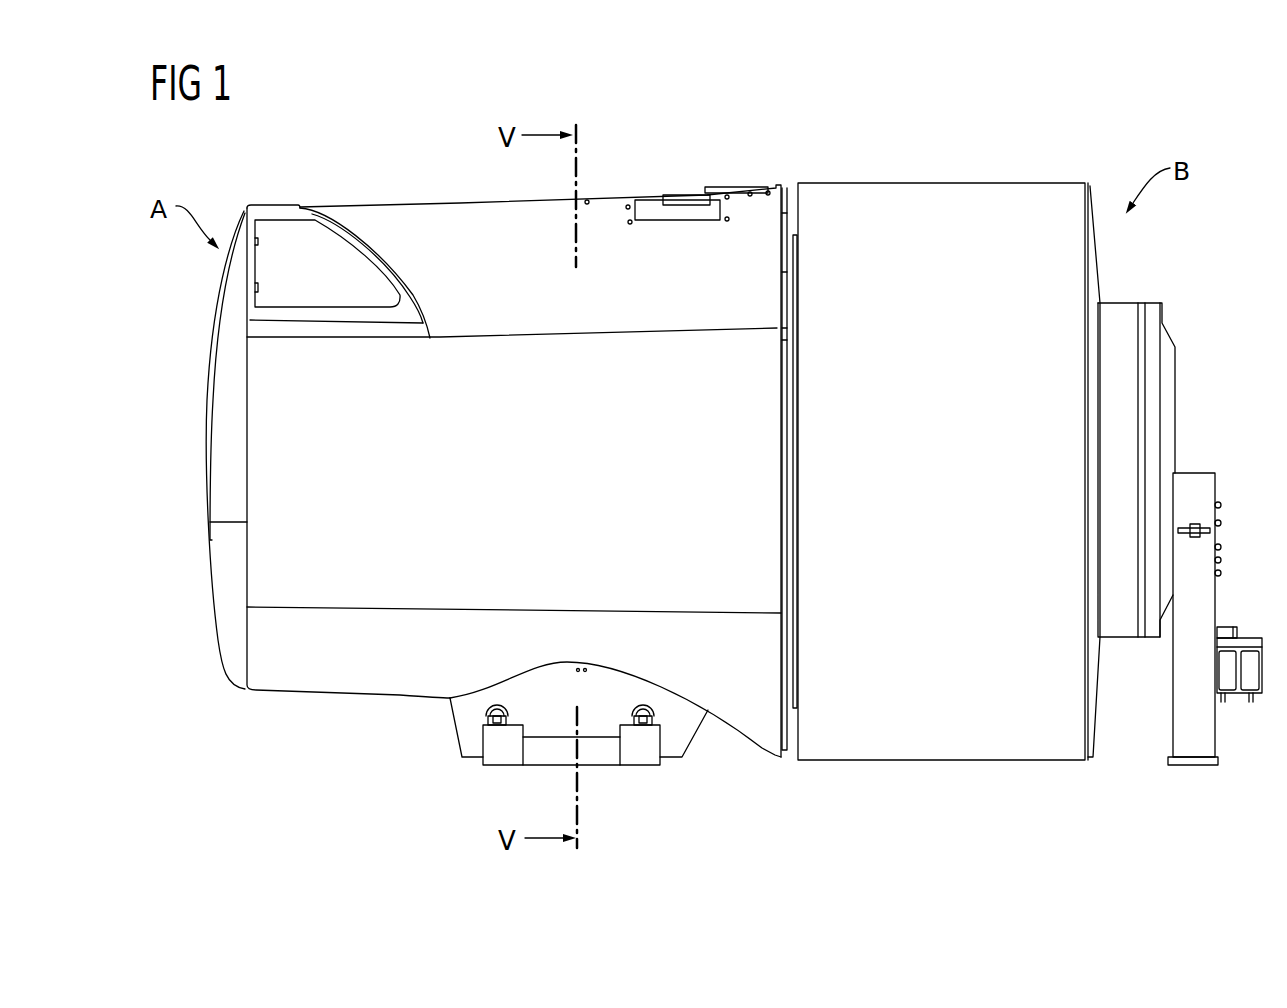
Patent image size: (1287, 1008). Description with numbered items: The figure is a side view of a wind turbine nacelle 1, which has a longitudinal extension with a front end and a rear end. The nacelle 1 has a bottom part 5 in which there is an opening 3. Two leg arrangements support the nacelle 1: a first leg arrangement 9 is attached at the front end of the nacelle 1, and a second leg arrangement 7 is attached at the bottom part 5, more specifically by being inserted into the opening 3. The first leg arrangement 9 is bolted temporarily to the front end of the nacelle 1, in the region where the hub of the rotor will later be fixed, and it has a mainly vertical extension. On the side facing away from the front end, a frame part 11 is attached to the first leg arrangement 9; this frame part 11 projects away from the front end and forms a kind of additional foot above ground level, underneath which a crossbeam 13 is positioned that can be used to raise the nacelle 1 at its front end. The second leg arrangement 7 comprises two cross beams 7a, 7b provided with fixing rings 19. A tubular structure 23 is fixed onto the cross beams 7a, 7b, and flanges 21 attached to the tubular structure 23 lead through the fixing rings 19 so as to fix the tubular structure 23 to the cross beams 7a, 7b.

The wind turbine nacelle 1 is at (788, 140).
The opening 3 is at (722, 755).
The bottom part 5 is at (950, 790).
The second leg arrangement 7 is at (544, 734).
The cross beam 7a is at (500, 757).
The cross beam 7b is at (638, 757).
The first leg arrangement 9 is at (1205, 490).
The frame part 11 is at (1222, 625).
The crossbeam 13 is at (1237, 698).
The fixing rings 19 is at (497, 703).
The flanges 21 is at (508, 721).
The tubular structure 23 is at (465, 710).